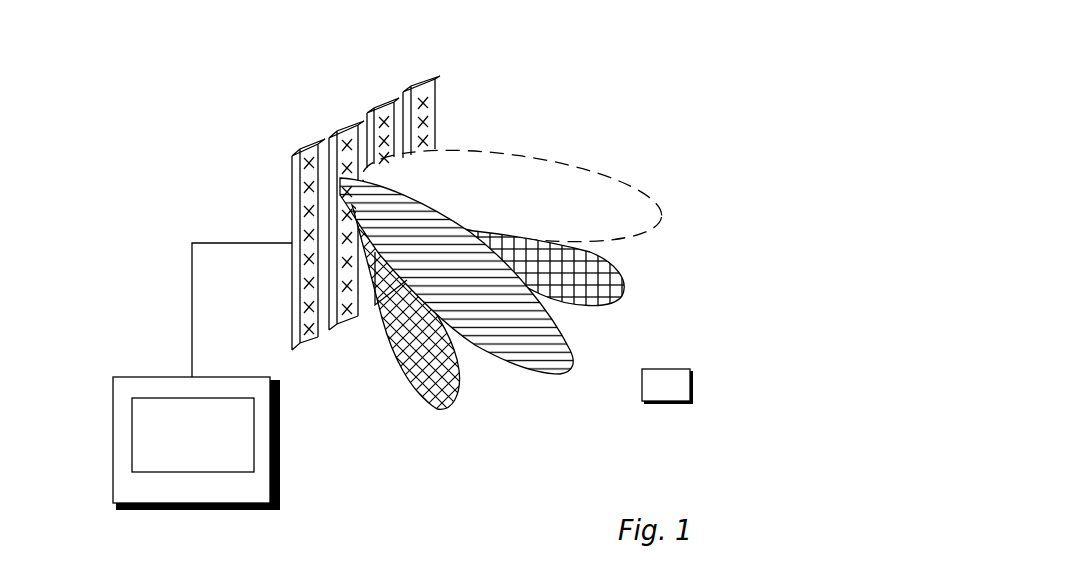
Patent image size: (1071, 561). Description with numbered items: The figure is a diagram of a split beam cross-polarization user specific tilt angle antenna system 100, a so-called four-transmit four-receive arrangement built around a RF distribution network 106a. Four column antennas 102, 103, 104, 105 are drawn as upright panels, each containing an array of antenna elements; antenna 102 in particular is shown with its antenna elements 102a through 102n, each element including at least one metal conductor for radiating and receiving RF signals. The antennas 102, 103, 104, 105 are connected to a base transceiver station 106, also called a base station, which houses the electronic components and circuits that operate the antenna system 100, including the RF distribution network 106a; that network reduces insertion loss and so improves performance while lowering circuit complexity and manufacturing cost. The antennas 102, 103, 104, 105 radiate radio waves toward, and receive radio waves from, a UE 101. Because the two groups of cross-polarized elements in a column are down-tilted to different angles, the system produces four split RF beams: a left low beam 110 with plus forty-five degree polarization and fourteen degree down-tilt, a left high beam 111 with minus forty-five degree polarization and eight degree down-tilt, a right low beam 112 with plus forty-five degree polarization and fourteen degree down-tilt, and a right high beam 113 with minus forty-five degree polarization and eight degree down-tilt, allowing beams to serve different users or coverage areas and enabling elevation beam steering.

The antenna system 100 is at (688, 62).
The UE 101 is at (693, 374).
The antenna 102 is at (286, 238).
The antenna element 102a is at (302, 187).
The antenna element 102n is at (307, 325).
The antenna 103 is at (345, 127).
The antenna 104 is at (383, 107).
The antenna 105 is at (418, 85).
The base transceiver station 106 is at (196, 429).
The RF distribution network 106a is at (193, 435).
The RF beam 110 is at (622, 278).
The RF beam 111 is at (657, 192).
The RF beam 112 is at (447, 403).
The RF beam 113 is at (562, 377).